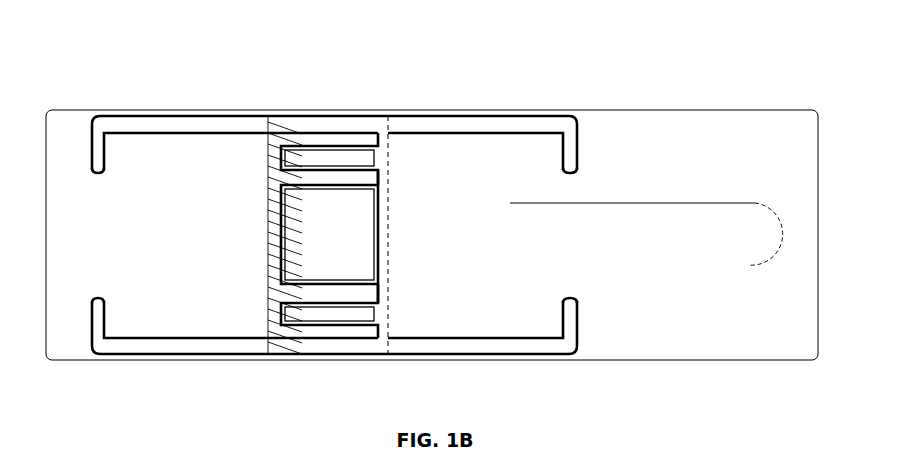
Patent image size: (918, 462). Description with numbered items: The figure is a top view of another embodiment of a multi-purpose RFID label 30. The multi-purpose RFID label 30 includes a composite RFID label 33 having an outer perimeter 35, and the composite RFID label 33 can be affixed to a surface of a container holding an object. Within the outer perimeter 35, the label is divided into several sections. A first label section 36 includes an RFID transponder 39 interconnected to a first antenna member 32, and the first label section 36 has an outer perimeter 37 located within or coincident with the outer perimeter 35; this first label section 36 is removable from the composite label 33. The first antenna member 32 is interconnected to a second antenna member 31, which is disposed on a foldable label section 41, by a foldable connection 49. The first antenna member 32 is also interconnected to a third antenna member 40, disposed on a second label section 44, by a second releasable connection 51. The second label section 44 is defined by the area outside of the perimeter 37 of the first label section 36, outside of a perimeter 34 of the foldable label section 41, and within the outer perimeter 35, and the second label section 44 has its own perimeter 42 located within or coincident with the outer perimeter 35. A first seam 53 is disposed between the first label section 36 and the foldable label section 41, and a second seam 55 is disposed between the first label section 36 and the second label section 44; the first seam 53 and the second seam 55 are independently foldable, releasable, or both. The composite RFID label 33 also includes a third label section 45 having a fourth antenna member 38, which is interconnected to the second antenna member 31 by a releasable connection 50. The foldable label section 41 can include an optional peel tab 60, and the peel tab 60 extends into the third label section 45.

The multi-purpose RFID label 30 is at (525, 48).
The second antenna member 31 is at (432, 125).
The first antenna member 32 is at (352, 121).
The composite RFID label 33 is at (617, 95).
The perimeter 34 is at (410, 108).
The outer perimeter 35 is at (64, 109).
The first label section 36 is at (327, 157).
The outer perimeter 37 is at (355, 361).
The fourth antenna member 38 is at (574, 151).
The RFID transponder 39 is at (284, 237).
The third antenna member 40 is at (170, 128).
The foldable label section 41 is at (488, 152).
The perimeter 42 is at (103, 109).
The second label section 44 is at (196, 268).
The third label section 45 is at (744, 320).
The foldable connection 49 is at (388, 119).
The releasable connection 50 is at (513, 121).
The second releasable connection 51 is at (267, 122).
The first seam 53 is at (392, 290).
The second seam 55 is at (267, 167).
The peel tab 60 is at (742, 237).